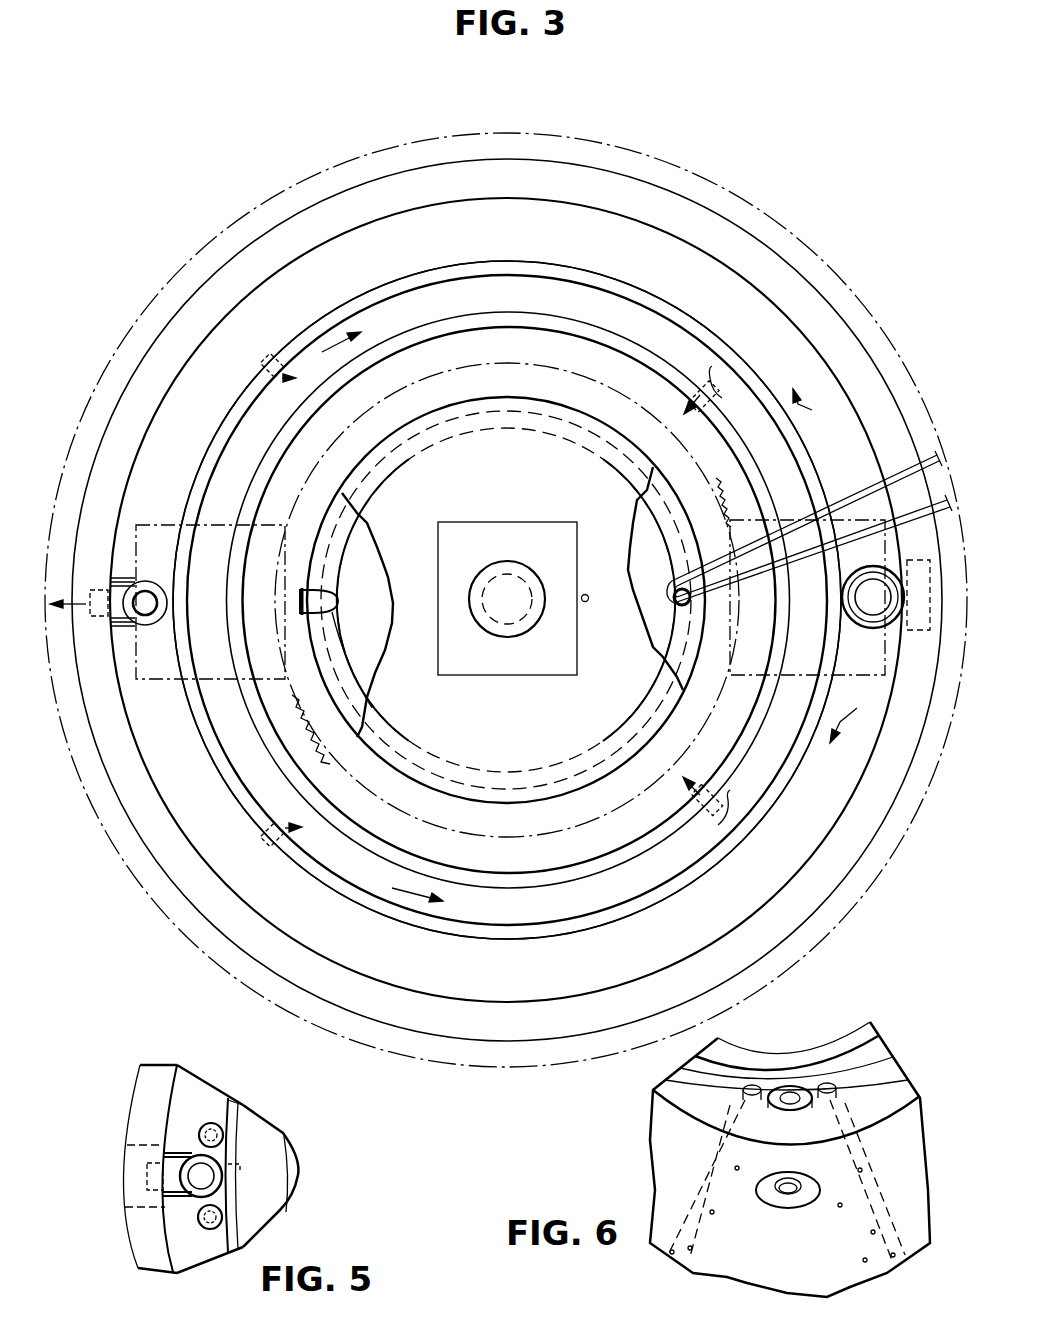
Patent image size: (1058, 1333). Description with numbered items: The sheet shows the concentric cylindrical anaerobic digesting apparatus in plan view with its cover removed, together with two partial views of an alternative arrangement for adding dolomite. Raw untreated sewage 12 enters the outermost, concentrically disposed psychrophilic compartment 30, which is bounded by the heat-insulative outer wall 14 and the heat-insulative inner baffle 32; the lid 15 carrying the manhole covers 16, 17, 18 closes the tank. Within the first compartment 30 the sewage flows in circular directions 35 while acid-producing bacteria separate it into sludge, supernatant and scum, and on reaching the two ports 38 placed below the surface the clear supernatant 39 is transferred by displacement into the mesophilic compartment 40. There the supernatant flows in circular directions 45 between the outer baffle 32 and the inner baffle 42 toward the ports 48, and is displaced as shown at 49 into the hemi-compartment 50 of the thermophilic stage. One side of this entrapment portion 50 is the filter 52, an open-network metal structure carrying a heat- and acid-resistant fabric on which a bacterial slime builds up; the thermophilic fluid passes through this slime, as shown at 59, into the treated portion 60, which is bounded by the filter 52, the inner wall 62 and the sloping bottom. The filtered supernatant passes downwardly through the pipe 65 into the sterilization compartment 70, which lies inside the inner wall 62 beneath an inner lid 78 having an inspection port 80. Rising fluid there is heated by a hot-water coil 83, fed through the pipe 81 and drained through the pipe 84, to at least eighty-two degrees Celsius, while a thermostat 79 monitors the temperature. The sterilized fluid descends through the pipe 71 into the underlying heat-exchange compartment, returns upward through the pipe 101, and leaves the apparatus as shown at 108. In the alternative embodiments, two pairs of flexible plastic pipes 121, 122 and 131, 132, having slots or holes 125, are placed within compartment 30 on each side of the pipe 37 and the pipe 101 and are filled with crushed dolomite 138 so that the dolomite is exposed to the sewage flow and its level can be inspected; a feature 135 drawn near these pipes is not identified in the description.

In FIG. 3, the raw untreated sewage 12 is at (930, 597).
In FIG. 3, the outer wall 14 is at (176, 339).
In FIG. 5, the outer wall 14 is at (130, 1221).
In FIG. 6, the outer wall 14 is at (690, 1100).
In FIG. 3, the lid 15 is at (662, 162).
In FIG. 3, the manhole cover 16 is at (810, 664).
In FIG. 3, the manhole cover 17 is at (562, 526).
In FIG. 3, the manhole cover 18 is at (163, 524).
In FIG. 3, the psychrophilic compartment 30 is at (750, 870).
In FIG. 5, the psychrophilic compartment 30 is at (174, 1247).
In FIG. 3, the inner baffle 32 is at (478, 937).
In FIG. 5, the inner baffle 32 is at (240, 1218).
In FIG. 6, the inner baffle 32 is at (867, 1055).
In FIG. 3, the circular flow directions 35 is at (840, 566).
In FIG. 3, the pipe 37 is at (873, 628).
In FIG. 5, the pipe 37 is at (199, 1155).
In FIG. 3, the ports 38 is at (258, 370).
In FIG. 3, the clear supernatant 39 is at (266, 356).
In FIG. 3, the mesophilic compartment 40 is at (658, 867).
In FIG. 5, the mesophilic compartment 40 is at (240, 1199).
In FIG. 3, the inner baffle 42 is at (556, 882).
In FIG. 5, the inner baffle 42 is at (284, 1148).
In FIG. 6, the inner baffle 42 is at (840, 1040).
In FIG. 3, the circular flow directions 45 is at (355, 333).
In FIG. 3, the ports 48 is at (695, 398).
In FIG. 3, the displacement flow 49 is at (720, 604).
In FIG. 3, the entrapment hemi-compartment 50 is at (633, 823).
In FIG. 5, the entrapment hemi-compartment 50 is at (295, 1171).
In FIG. 3, the filter 52 is at (306, 753).
In FIG. 3, the filtered flow 59 is at (414, 401).
In FIG. 3, the treated portion 60 is at (637, 775).
In FIG. 3, the inner wall 62 is at (335, 512).
In FIG. 3, the pipe 65 is at (334, 600).
In FIG. 3, the sterilization compartment 70 is at (362, 612).
In FIG. 3, the pipe 71 is at (673, 595).
In FIG. 3, the inner lid 78 is at (500, 735).
In FIG. 3, the thermostat 79 is at (588, 601).
In FIG. 3, the inspection port 80 is at (481, 630).
In FIG. 3, the hot-water inlet pipe 81 is at (858, 484).
In FIG. 3, the hot-water coil 83 is at (343, 635).
In FIG. 3, the cooled-water outlet pipe 84 is at (864, 534).
In FIG. 3, the pipe 101 is at (146, 626).
In FIG. 6, the pipe 101 is at (790, 1086).
In FIG. 3, the exit flow 108 is at (72, 612).
In FIG. 5, the flexible plastic pipe 121 is at (210, 1230).
In FIG. 5, the flexible plastic pipe 122 is at (218, 1130).
In FIG. 6, the slots or holes 125 is at (710, 1190).
In FIG. 6, the flexible plastic pipe 131 is at (893, 1073).
In FIG. 6, the flexible plastic pipe 132 is at (745, 1087).
In FIG. 5, the recess 135 is at (241, 1165).
In FIG. 5, the crushed dolomite 138 is at (214, 1123).